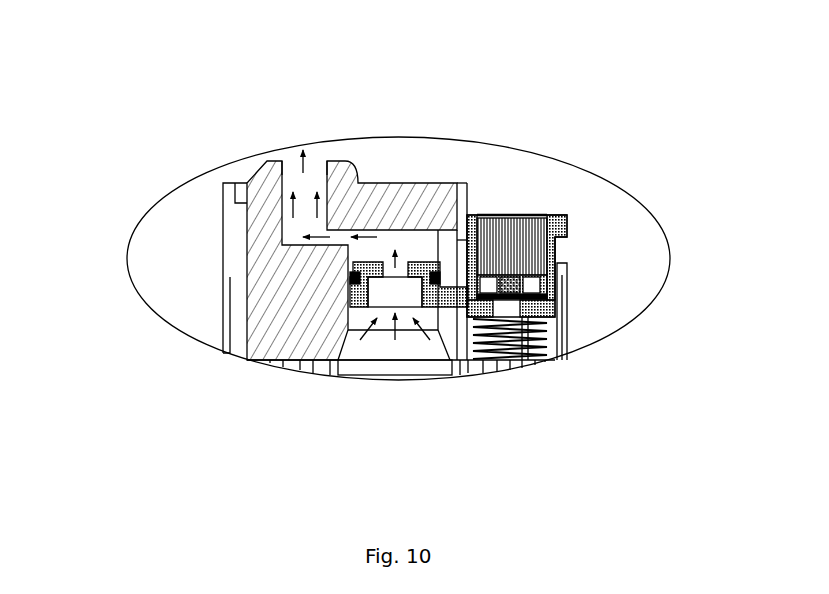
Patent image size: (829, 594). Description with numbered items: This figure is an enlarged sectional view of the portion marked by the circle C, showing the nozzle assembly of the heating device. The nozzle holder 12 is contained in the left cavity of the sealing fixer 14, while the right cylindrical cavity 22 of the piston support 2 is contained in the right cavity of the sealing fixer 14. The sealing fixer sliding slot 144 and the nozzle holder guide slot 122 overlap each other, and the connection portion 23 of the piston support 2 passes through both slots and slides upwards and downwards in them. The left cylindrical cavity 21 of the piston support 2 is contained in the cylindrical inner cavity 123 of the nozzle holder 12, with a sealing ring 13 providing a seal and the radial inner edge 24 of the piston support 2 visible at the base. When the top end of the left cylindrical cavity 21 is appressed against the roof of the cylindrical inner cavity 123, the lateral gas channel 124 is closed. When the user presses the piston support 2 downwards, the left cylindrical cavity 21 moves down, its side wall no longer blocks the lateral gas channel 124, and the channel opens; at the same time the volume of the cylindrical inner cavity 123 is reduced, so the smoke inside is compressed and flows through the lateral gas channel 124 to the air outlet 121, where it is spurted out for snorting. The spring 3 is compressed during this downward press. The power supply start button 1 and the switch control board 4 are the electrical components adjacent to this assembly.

The power supply start button 1 is at (606, 189).
The piston support 2 is at (555, 250).
The spring 3 is at (450, 337).
The switch control board 4 is at (565, 297).
The nozzle holder 12 is at (398, 183).
The sealing ring 13 is at (410, 211).
The sealing fixer 14 is at (233, 253).
The left cylindrical cavity 21 is at (482, 215).
The right cylindrical cavity 22 is at (567, 222).
The connection portion 23 is at (523, 363).
The radial inner edge 24 is at (340, 307).
The air outlet 121 is at (302, 162).
The nozzle holder guide slot 122 is at (440, 258).
The cylindrical inner cavity 123 is at (386, 245).
The lateral gas channel 124 is at (323, 228).
The sealing fixer sliding slot 144 is at (463, 247).
The circle C is at (145, 302).